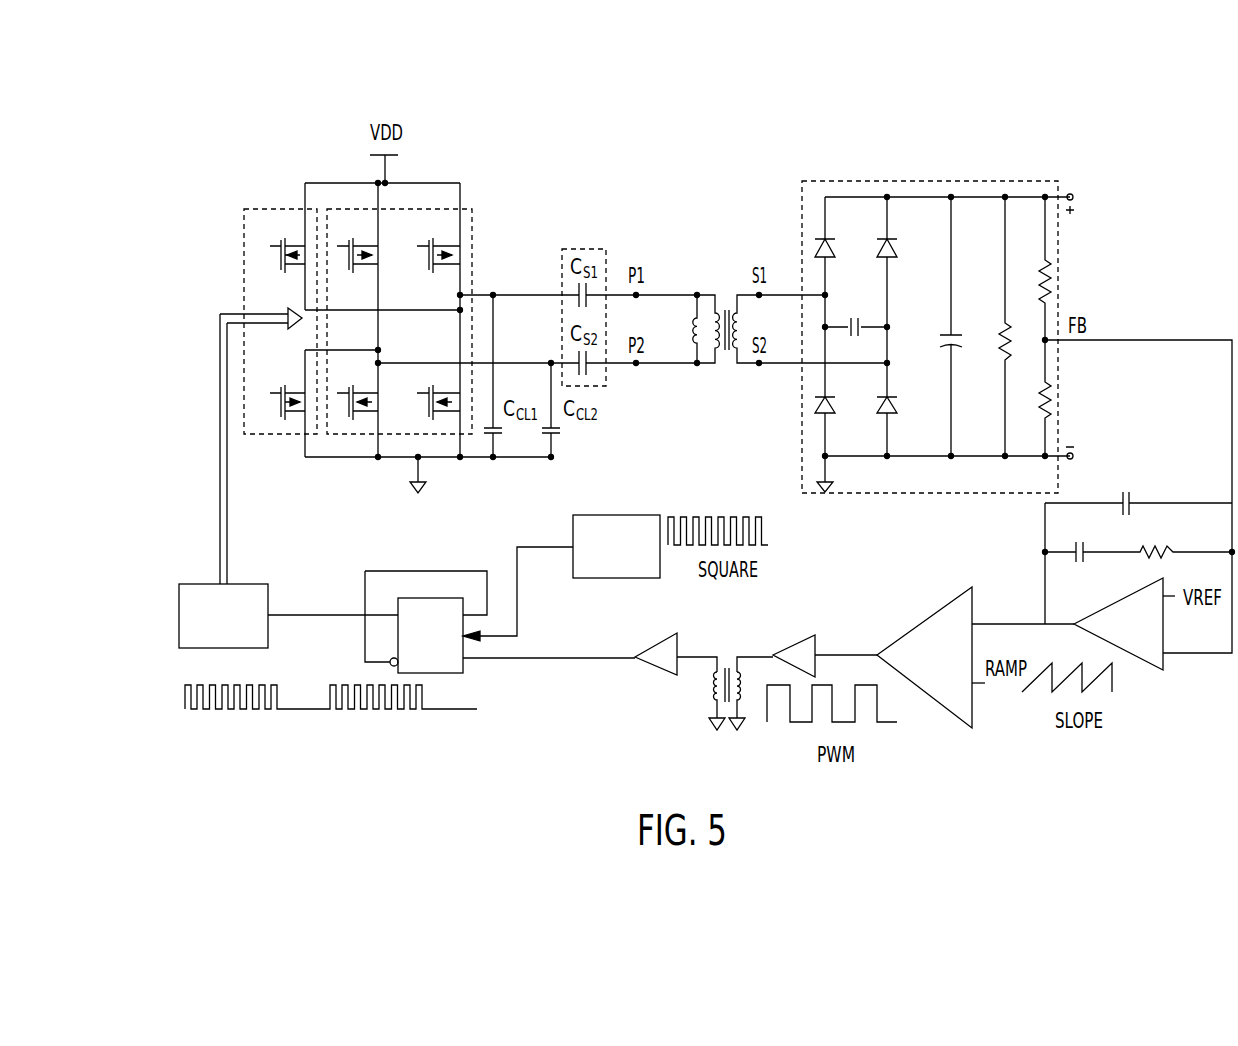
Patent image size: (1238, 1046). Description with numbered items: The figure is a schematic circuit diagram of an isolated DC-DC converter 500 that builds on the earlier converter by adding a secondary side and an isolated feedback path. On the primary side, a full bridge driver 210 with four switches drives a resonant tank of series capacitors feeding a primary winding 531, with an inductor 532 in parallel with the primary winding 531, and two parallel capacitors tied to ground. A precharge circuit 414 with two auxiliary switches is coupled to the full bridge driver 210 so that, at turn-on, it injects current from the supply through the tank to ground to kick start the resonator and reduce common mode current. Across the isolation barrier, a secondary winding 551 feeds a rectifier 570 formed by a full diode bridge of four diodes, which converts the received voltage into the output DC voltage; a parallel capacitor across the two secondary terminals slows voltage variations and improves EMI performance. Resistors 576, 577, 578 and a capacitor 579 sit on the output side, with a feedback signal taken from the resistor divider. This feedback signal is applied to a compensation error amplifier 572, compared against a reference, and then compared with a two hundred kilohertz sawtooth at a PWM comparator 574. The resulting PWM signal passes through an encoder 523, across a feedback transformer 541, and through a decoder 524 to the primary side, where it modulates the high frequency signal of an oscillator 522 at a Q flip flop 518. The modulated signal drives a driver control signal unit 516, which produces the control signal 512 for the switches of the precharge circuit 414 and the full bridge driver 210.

The isolated DC-DC converter 500 is at (1135, 163).
The precharge circuit 414 is at (282, 207).
The full bridge driver 210 is at (366, 440).
The control signal 512 is at (228, 540).
The driver control signal unit 516 is at (270, 592).
The Q flip flop 518 is at (437, 597).
The oscillator 522 is at (573, 580).
The encoder 523 is at (785, 645).
The decoder 524 is at (640, 662).
The primary winding 531 is at (713, 350).
The inductor winding 532 is at (695, 330).
The feedback transformer 541 is at (712, 710).
The secondary winding 551 is at (739, 350).
The rectifier 570 is at (885, 495).
The compensation error amplifier 572 is at (1155, 670).
The PWM comparator 574 is at (940, 705).
The resistor 576 is at (1008, 328).
The resistor 577 is at (1060, 286).
The resistor 578 is at (1058, 402).
The capacitor 579 is at (946, 340).